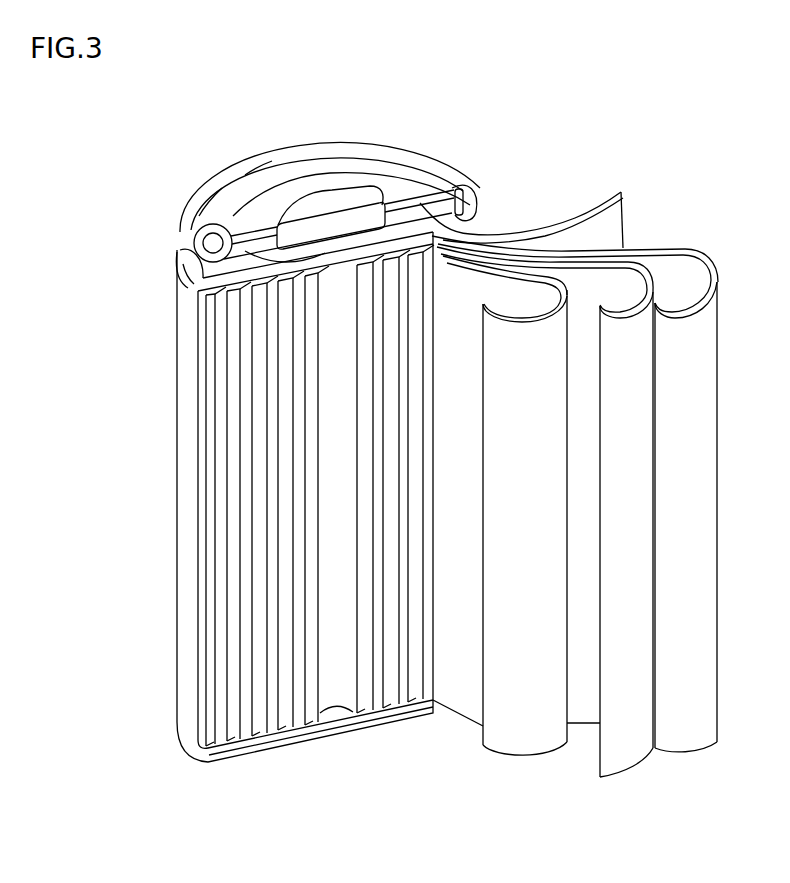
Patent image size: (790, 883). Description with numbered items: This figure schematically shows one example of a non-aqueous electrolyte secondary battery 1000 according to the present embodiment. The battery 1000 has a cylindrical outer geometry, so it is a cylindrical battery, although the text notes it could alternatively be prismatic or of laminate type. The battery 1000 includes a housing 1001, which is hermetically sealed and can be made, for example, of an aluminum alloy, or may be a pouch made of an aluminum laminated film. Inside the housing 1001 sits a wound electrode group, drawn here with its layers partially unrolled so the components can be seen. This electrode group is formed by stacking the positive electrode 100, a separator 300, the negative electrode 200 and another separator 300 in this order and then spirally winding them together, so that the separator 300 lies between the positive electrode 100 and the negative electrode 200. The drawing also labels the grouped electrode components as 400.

The battery 1000 is at (742, 80).
The housing 1001 is at (191, 433).
The positive electrode 100 is at (522, 752).
The negative electrode 200 is at (697, 742).
The separator 300 is at (610, 765).
The electrode assembly 400 is at (725, 822).